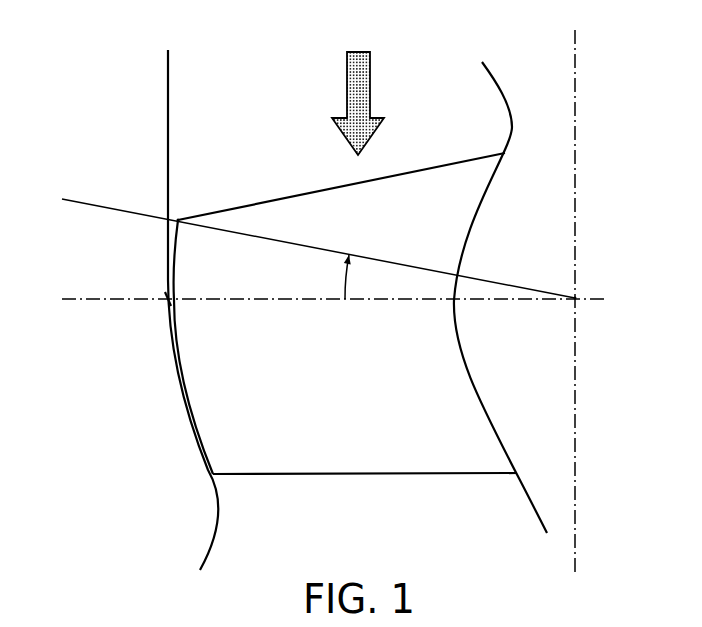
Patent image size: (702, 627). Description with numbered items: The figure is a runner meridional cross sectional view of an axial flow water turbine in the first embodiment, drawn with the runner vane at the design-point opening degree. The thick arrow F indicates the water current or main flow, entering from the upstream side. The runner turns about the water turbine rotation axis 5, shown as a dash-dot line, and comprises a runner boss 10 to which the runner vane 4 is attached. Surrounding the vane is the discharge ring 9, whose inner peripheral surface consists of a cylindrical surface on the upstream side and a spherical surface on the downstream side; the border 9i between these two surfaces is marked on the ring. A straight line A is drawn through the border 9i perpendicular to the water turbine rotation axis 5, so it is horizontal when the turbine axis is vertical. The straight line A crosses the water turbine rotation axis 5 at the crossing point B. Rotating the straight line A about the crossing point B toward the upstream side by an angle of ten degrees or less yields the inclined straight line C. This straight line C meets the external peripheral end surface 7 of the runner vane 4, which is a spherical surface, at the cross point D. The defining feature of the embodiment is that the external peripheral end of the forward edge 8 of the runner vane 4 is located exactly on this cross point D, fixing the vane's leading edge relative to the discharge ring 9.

The runner vane 4 is at (313, 474).
The water turbine rotation axis 5 is at (575, 130).
The external peripheral end surface 7 is at (182, 353).
The forward edge 8 is at (414, 170).
The discharge ring 9 is at (168, 98).
The border 9i is at (168, 299).
The runner boss 10 is at (534, 489).
The straight line A is at (95, 299).
The crossing point B is at (575, 298).
The straight line C is at (95, 206).
The cross point D is at (179, 220).
The water current F is at (370, 80).